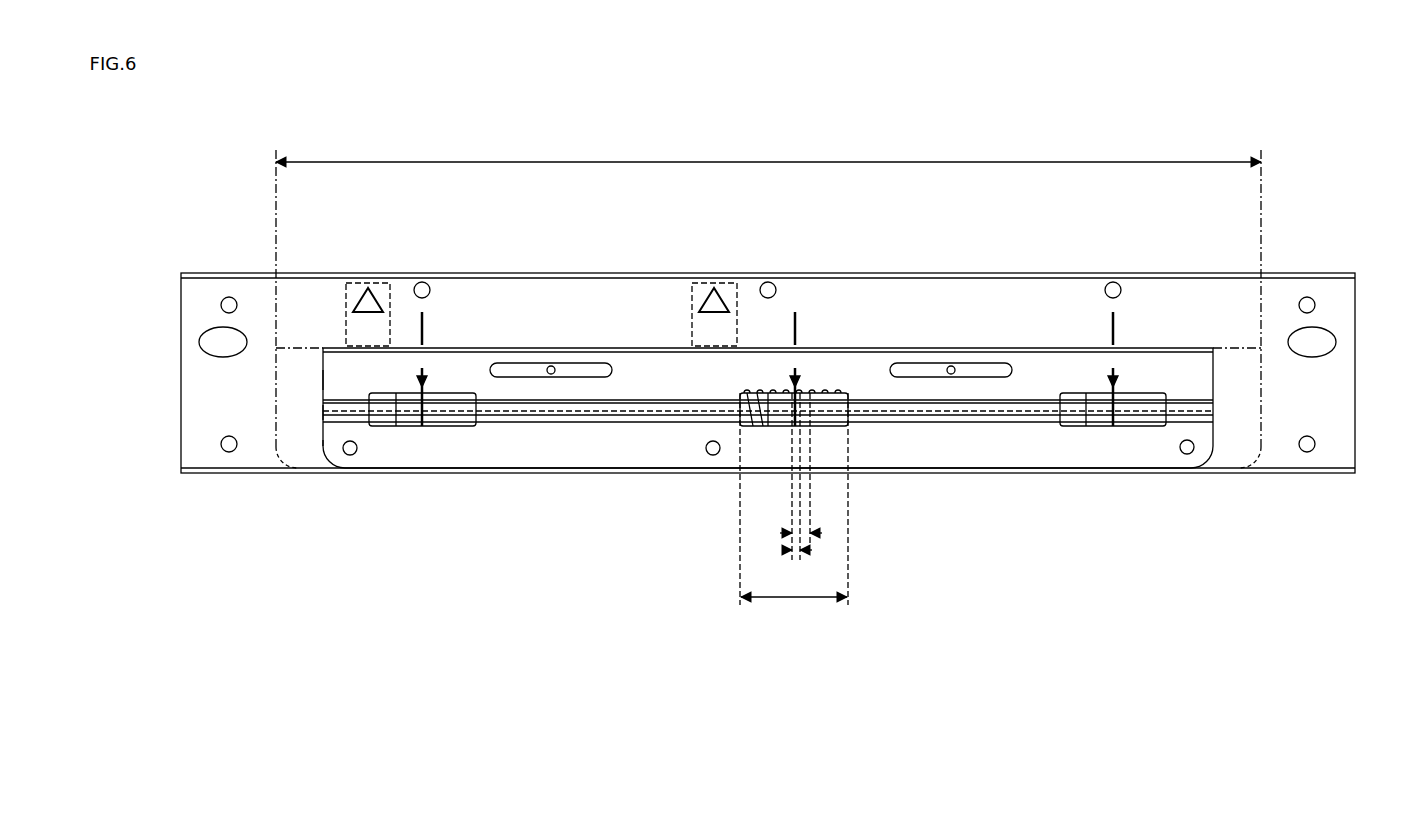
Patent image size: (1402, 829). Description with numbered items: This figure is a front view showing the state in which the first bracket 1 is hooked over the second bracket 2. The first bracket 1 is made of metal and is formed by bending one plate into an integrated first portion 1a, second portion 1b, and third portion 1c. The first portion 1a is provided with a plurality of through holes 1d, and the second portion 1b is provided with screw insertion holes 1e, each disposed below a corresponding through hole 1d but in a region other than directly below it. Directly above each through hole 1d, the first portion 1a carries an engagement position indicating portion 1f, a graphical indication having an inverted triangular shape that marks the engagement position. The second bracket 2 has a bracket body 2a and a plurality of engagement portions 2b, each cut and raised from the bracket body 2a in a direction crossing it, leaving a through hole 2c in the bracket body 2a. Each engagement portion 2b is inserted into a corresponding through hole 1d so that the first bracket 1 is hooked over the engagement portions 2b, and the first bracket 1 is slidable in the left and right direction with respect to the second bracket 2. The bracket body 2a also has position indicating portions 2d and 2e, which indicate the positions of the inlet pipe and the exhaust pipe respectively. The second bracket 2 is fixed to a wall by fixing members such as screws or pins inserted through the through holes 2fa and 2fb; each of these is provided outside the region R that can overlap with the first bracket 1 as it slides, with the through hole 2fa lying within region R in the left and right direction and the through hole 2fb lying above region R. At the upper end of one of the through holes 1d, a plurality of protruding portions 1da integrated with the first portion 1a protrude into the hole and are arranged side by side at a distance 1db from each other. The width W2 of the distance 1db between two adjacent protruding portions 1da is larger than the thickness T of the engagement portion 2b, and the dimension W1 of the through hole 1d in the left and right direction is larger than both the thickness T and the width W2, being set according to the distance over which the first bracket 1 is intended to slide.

The first bracket 1 is at (1213, 464).
The first portion 1a is at (330, 378).
The second portion 1b is at (332, 447).
The third portion 1c is at (330, 413).
The through hole 1d is at (447, 427).
The protruding portion 1da is at (750, 395).
The distance 1db is at (757, 395).
The screw insertion hole 1e is at (352, 455).
The engagement position indicating portion 1f is at (432, 378).
The second bracket 2 is at (931, 268).
The bracket body 2a is at (556, 300).
The engagement portion 2b is at (428, 382).
The through hole 2c is at (390, 404).
The position indicating portion 2d is at (345, 303).
The position indicating portion 2e is at (691, 303).
The through hole 2fa is at (229, 452).
The through hole 2fb is at (229, 297).
The region R is at (768, 150).
The dimension W1 is at (794, 508).
The width W2 is at (802, 477).
The thickness T is at (797, 485).